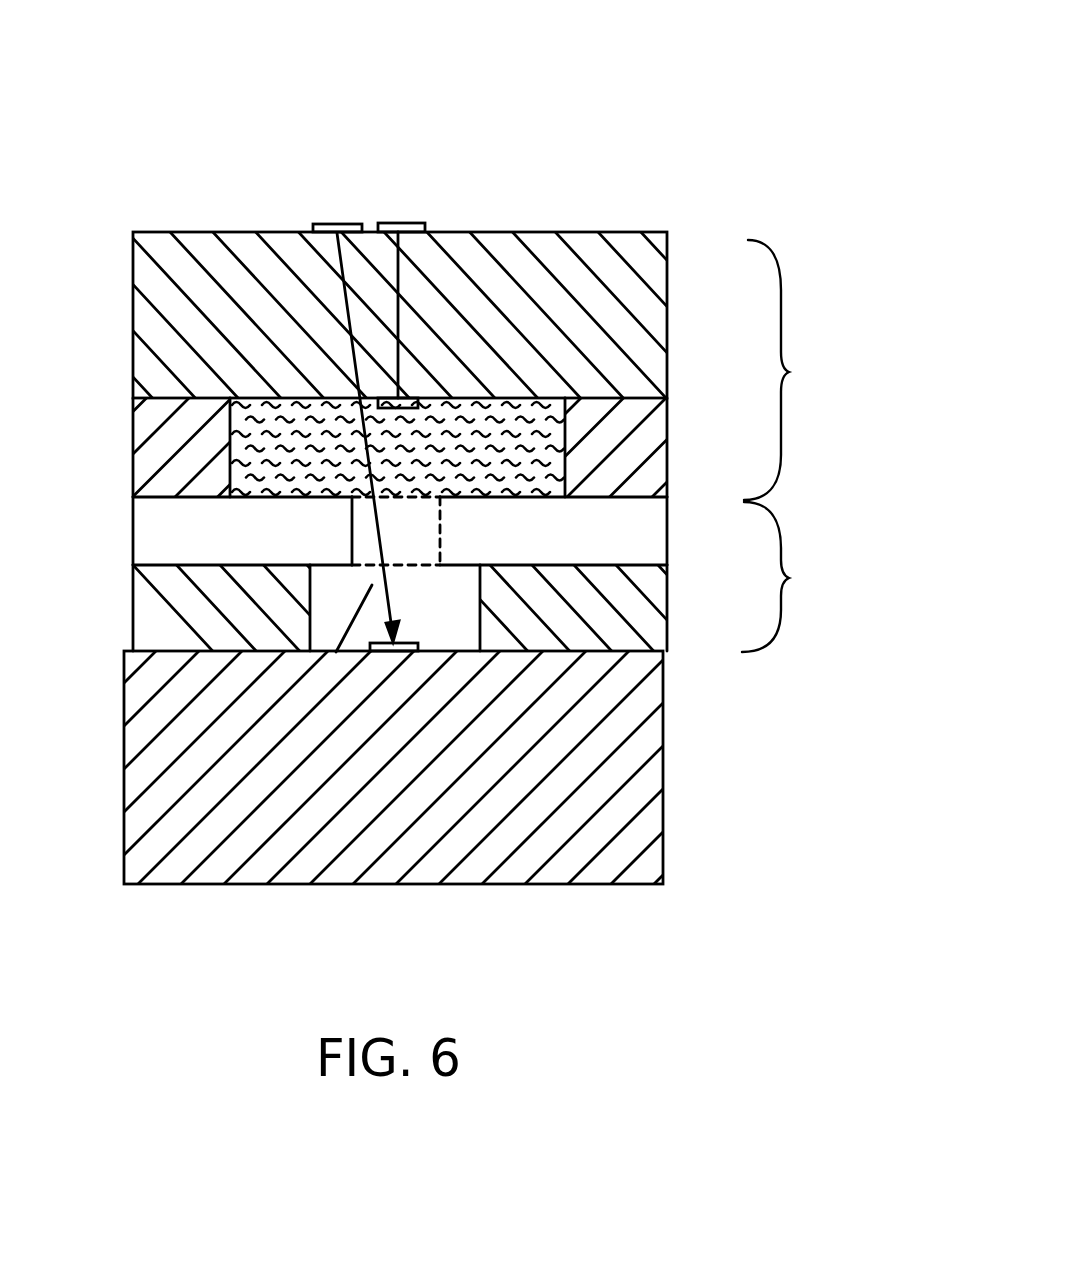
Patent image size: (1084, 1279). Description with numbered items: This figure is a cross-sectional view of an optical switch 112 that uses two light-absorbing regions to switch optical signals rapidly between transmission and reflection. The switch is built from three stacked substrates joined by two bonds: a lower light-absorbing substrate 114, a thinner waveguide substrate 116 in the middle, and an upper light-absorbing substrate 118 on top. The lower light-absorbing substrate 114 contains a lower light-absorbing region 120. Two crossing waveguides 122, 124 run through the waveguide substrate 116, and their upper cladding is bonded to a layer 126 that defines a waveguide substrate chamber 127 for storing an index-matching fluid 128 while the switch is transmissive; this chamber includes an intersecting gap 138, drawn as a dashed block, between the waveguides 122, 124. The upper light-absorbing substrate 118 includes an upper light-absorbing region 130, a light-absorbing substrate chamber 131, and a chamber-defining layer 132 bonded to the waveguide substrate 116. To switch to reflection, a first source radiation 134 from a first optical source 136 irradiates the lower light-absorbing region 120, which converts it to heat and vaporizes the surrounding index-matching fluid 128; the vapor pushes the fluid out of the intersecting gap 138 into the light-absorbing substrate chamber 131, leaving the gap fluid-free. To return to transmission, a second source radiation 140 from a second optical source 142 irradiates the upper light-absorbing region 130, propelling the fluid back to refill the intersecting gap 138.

The optical switch 112 is at (667, 47).
The lower light-absorbing substrate 114 is at (650, 812).
The waveguide substrate 116 is at (785, 577).
The upper light-absorbing substrate 118 is at (787, 370).
The lower light-absorbing region 120 is at (410, 653).
The waveguide 122 is at (148, 533).
The waveguide 124 is at (650, 537).
The layer 126 is at (665, 612).
The waveguide substrate chamber 127 is at (367, 556).
The index-matching fluid 128 is at (603, 240).
The upper light-absorbing region 130 is at (408, 400).
The light-absorbing substrate chamber 131 is at (535, 412).
The chamber-defining layer 132 is at (655, 457).
The first source radiation 134 is at (343, 278).
The first optical source 136 is at (317, 224).
The intersecting gap 138 is at (367, 550).
The second source radiation 140 is at (400, 264).
The second optical source 142 is at (403, 223).